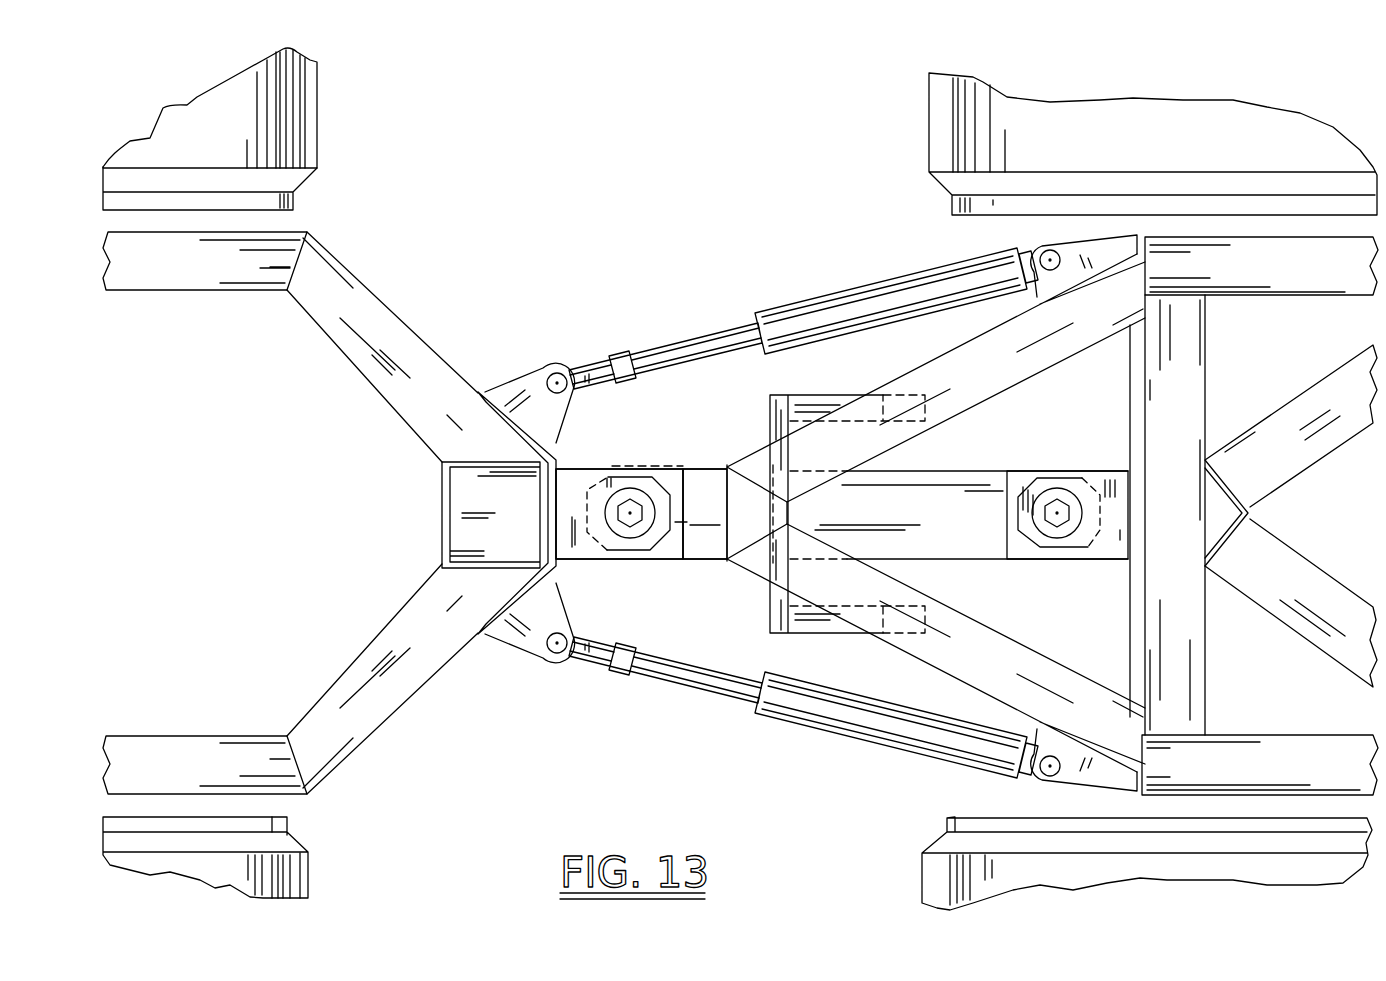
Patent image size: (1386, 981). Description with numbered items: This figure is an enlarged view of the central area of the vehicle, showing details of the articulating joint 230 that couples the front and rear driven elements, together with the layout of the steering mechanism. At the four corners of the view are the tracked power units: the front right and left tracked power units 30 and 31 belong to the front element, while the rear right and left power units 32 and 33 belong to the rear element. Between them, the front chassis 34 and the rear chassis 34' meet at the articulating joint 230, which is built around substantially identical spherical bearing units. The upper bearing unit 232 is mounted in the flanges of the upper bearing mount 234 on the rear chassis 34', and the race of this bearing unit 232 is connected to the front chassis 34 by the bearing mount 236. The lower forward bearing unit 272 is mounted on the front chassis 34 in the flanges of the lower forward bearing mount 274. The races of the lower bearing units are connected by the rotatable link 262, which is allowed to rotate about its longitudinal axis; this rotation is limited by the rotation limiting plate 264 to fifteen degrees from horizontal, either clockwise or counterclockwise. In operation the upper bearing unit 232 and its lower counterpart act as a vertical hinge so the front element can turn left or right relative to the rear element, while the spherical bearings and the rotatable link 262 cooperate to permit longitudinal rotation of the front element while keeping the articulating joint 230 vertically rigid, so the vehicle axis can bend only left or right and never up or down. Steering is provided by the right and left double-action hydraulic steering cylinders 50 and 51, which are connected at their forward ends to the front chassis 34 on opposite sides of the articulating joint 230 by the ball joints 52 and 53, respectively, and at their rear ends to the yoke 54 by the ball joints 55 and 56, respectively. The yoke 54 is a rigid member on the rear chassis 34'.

The front right tracked power unit 30 is at (920, 890).
The front left tracked power unit 31 is at (923, 107).
The rear right power unit 32 is at (311, 870).
The rear left power unit 33 is at (323, 112).
The front chassis 34 is at (936, 378).
The rear chassis 34' is at (382, 513).
The right double-action hydraulic steering cylinder 50 is at (848, 735).
The left double-action hydraulic steering cylinder 51 is at (820, 303).
The ball joint 52 is at (1042, 770).
The ball joint 53 is at (1047, 253).
The yoke 54 is at (557, 560).
The ball joint 55 is at (552, 660).
The ball joint 56 is at (556, 372).
The articulating joint 230 is at (697, 697).
The upper spherical bearing unit 232 is at (632, 495).
The upper bearing mount 234 is at (568, 482).
The bearing mount 236 is at (710, 487).
The rotatable link 262 is at (950, 540).
The rotation limiting plate 264 is at (770, 598).
The lower forward spherical bearing unit 272 is at (1063, 527).
The lower forward bearing mount 274 is at (1123, 477).